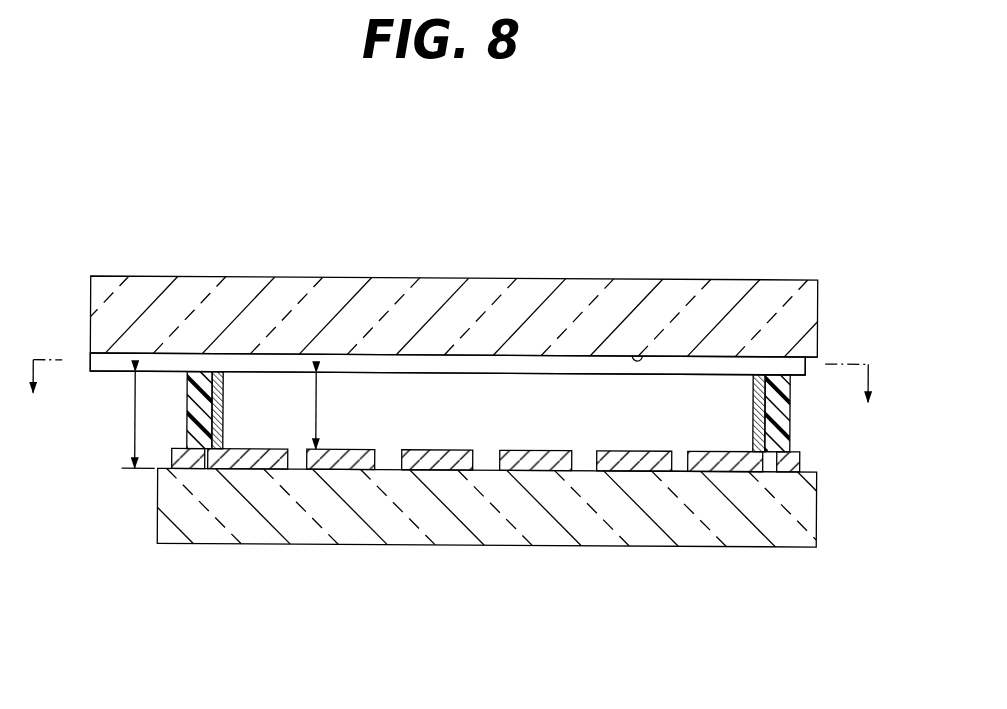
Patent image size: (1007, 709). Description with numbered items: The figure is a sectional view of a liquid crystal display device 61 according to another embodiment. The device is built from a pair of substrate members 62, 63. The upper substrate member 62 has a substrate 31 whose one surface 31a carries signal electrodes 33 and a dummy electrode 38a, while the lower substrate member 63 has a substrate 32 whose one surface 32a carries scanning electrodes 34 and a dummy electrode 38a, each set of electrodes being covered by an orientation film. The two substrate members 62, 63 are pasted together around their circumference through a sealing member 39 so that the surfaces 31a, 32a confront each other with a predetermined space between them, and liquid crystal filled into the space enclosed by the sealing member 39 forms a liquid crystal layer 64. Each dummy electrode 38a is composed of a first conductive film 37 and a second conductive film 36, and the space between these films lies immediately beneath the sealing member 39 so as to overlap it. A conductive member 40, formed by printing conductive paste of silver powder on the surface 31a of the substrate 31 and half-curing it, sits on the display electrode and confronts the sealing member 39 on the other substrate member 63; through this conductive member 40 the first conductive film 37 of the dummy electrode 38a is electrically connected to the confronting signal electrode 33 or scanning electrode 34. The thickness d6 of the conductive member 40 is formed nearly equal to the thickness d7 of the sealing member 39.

The liquid crystal display device 61 is at (676, 162).
The substrate member 62 is at (82, 280).
The substrate member 63 is at (82, 457).
The substrate 31 is at (768, 292).
The one surface of substrate 31a is at (636, 350).
The signal electrodes 33 is at (371, 366).
The substrate 32 is at (592, 528).
The one surface of substrate 32a is at (683, 468).
The scanning electrodes 34 is at (605, 452).
The second conductive film 36 is at (183, 456).
The first conductive film 37 is at (258, 456).
The dummy electrode 38a is at (170, 603).
The sealing member 39 is at (200, 385).
The conductive member 40 is at (214, 410).
The liquid crystal layer 64 is at (558, 392).
The thickness of conductive member d6 is at (318, 408).
The thickness of sealing member d7 is at (135, 418).